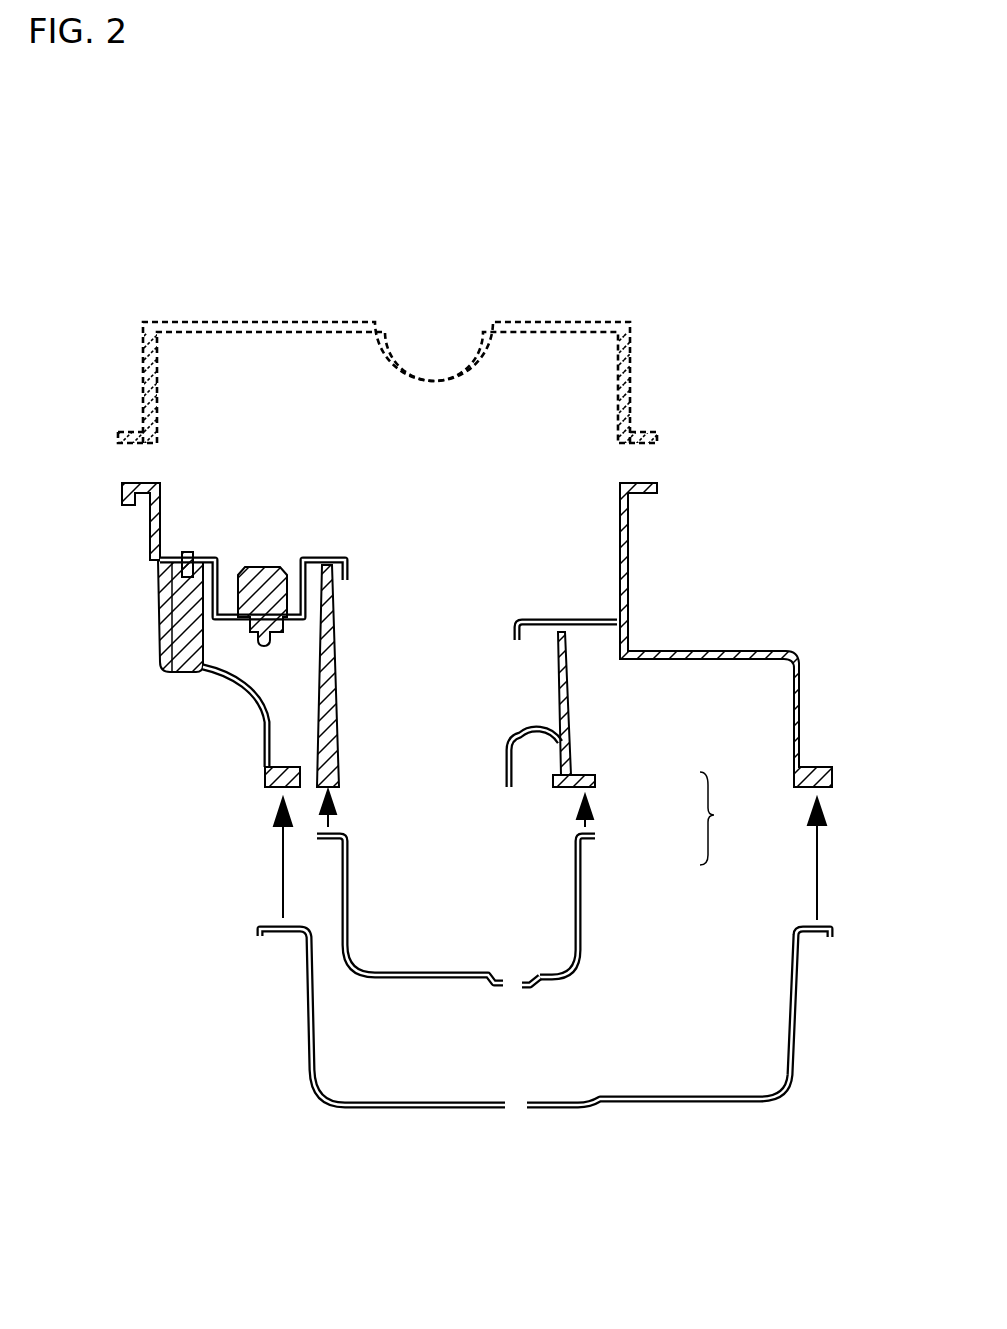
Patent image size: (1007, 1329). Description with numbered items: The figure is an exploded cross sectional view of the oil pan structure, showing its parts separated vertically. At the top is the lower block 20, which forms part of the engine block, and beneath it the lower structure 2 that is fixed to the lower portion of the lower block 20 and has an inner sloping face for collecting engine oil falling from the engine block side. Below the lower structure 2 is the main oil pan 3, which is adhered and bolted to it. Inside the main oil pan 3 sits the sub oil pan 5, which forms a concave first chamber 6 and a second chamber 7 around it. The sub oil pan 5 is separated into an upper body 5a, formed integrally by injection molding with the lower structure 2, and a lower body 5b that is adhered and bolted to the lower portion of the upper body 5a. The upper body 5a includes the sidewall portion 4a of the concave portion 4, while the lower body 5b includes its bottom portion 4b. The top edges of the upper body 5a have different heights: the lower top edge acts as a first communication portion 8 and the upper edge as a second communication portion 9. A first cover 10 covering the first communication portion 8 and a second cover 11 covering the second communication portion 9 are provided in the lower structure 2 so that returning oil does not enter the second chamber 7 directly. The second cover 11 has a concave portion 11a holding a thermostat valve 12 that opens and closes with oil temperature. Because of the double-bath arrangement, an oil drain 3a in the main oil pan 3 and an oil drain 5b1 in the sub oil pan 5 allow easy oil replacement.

The lower structure 2 is at (627, 540).
The main oil pan 3 is at (788, 1015).
The oil drain 3a is at (527, 1105).
The concave portion 4 is at (347, 905).
The sidewall portion 4a is at (322, 678).
The bottom portion 4b is at (413, 977).
The sub oil pan 5 is at (718, 818).
The upper body 5a is at (560, 730).
The lower body 5b is at (583, 897).
The oil drain 5b1 is at (530, 983).
The first chamber 6 is at (365, 862).
The second chamber 7 is at (338, 1085).
The first communication portion 8 is at (557, 632).
The second communication portion 9 is at (332, 567).
The first cover 10 is at (537, 620).
The second cover 11 is at (210, 558).
The concave portion 11a is at (223, 585).
The thermostat valve 12 is at (260, 575).
The lower block 20 is at (634, 357).